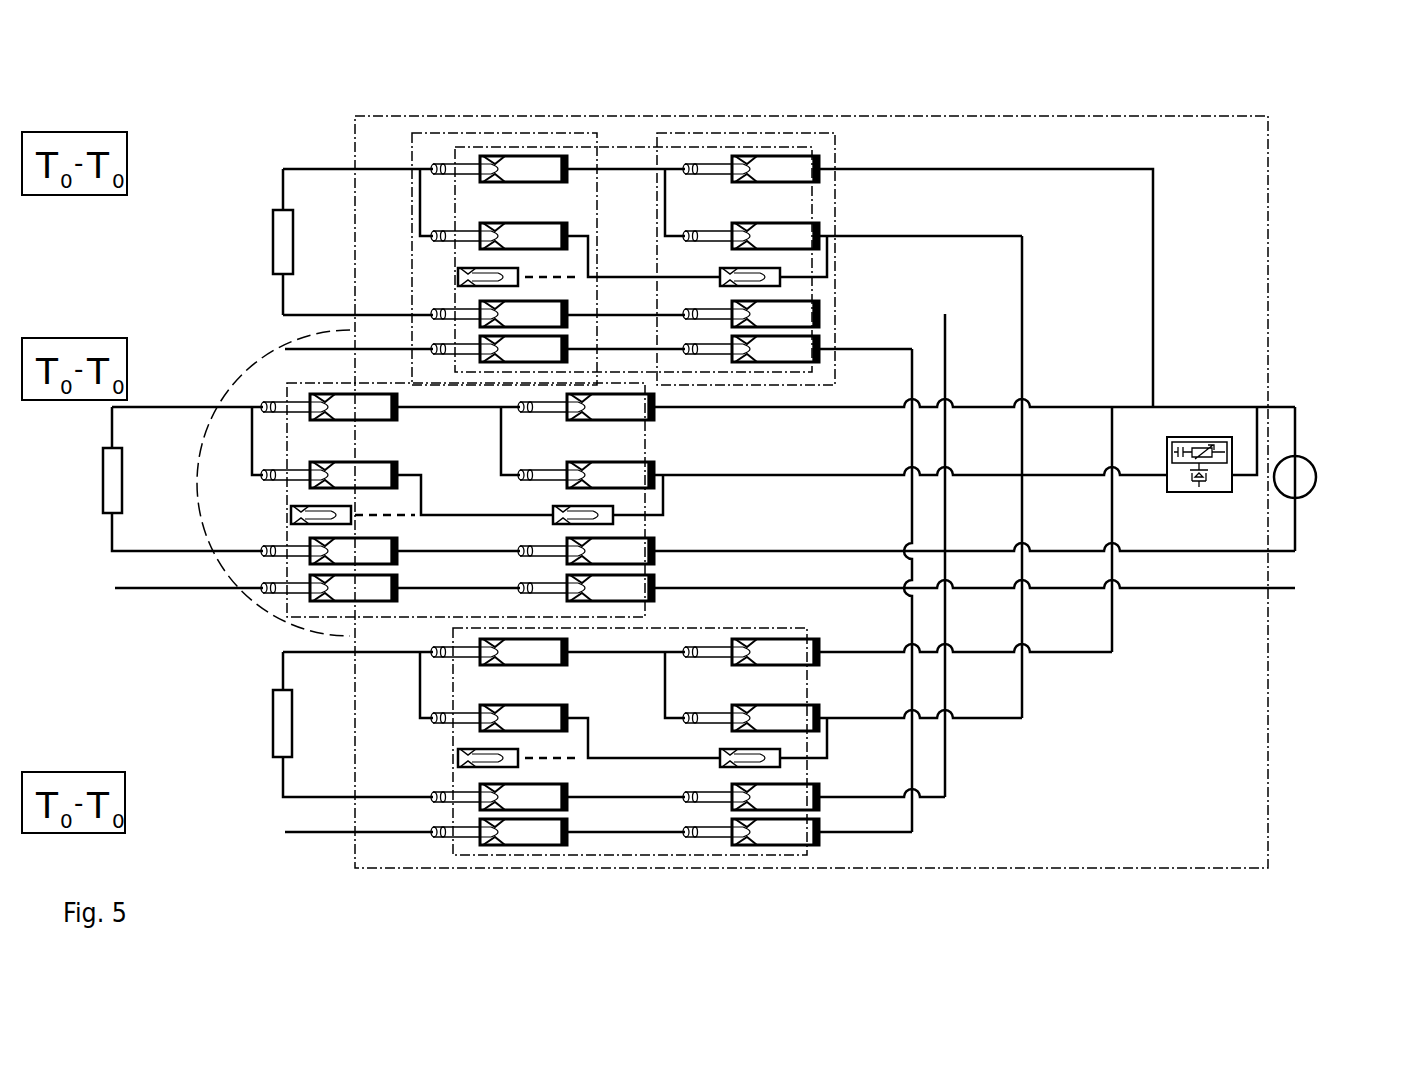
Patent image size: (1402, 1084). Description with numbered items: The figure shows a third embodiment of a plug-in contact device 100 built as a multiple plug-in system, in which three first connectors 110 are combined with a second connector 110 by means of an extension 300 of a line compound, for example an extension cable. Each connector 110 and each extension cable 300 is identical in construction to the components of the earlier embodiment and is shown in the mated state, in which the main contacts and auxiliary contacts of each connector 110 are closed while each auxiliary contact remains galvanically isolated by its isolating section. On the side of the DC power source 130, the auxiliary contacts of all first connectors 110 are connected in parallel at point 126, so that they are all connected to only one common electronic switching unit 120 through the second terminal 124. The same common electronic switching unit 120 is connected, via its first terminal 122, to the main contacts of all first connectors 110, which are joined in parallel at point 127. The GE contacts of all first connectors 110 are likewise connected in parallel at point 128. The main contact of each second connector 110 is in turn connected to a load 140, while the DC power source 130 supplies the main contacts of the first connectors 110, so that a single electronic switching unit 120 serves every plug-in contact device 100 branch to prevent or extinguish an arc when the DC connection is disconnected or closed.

The plug-in contact device 100 is at (940, 116).
The connector 110 is at (503, 133).
The electronic switching unit 120 is at (1205, 437).
The first terminal 122 is at (1245, 477).
The second terminal 124 is at (1155, 477).
The point 126 is at (1022, 475).
The point 127 is at (1112, 407).
The point 128 is at (943, 551).
The DC power source 130 is at (1298, 470).
The load 140 is at (273, 240).
The extension of a line compound 300 is at (625, 147).